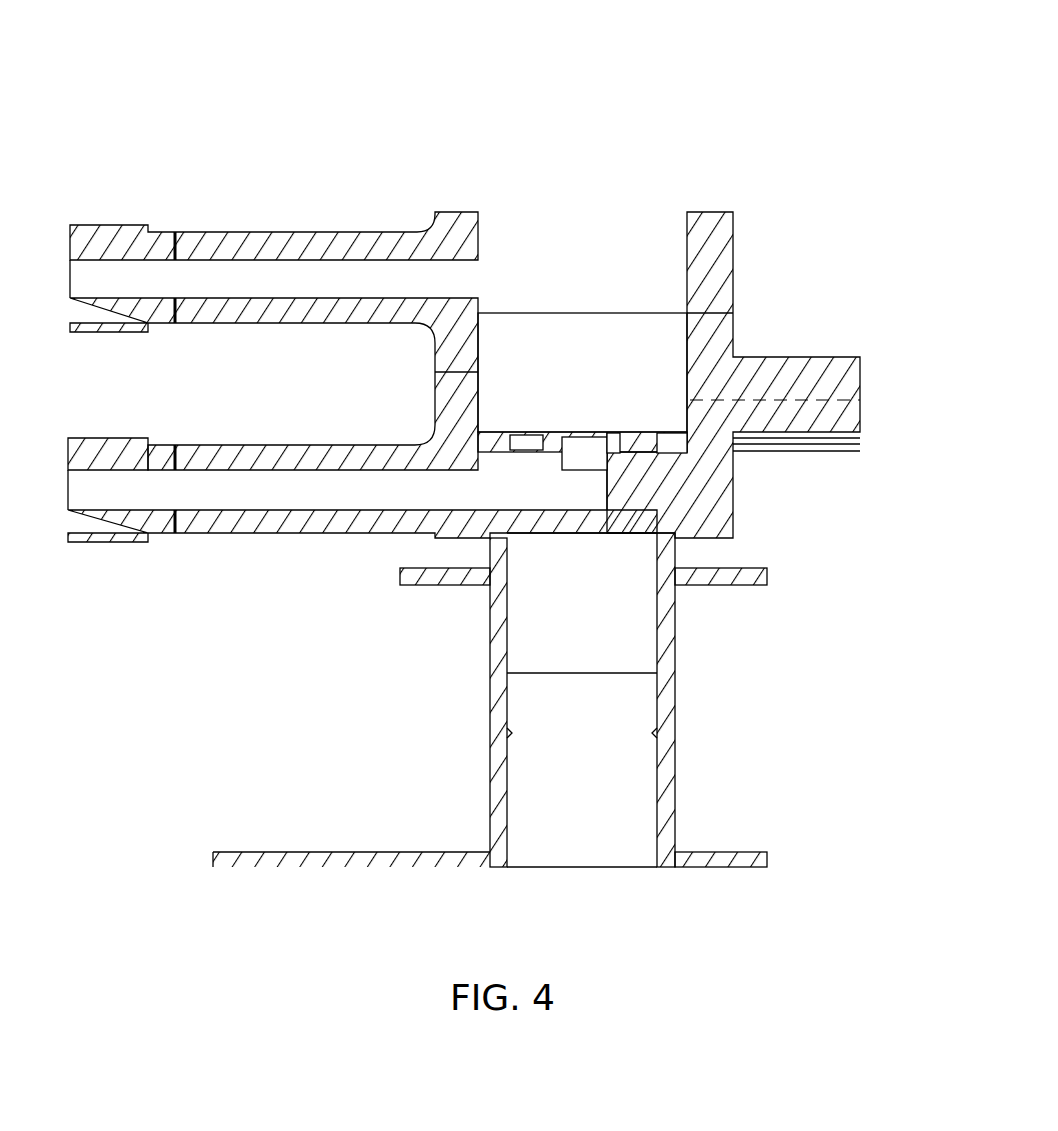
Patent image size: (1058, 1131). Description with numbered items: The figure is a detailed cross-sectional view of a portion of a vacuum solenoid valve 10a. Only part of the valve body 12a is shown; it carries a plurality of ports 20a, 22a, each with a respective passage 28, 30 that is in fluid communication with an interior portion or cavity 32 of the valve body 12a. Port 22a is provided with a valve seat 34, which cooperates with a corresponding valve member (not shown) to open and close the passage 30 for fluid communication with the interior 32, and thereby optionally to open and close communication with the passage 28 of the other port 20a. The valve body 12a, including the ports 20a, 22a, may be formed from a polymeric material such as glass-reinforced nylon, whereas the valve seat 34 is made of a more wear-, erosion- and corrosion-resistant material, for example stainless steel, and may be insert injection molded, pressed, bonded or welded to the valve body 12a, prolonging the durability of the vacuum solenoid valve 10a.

The vacuum solenoid valve 10a is at (642, 92).
The valve body 12a is at (733, 268).
The port 20a is at (232, 237).
The port 22a is at (230, 447).
The passage 28 is at (307, 273).
The passage 30 is at (287, 497).
The interior portion or cavity 32 is at (622, 353).
The valve seat 34 is at (555, 432).